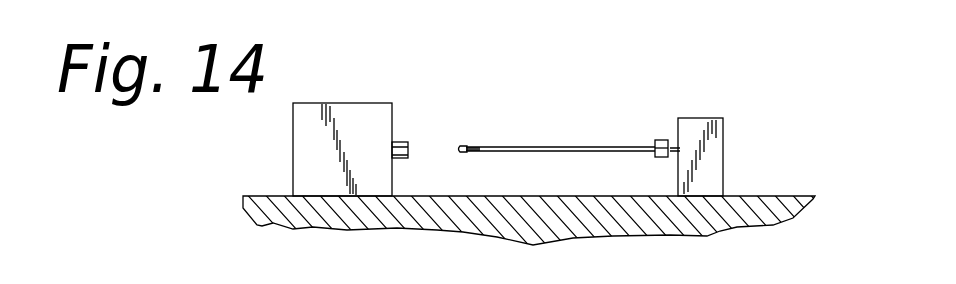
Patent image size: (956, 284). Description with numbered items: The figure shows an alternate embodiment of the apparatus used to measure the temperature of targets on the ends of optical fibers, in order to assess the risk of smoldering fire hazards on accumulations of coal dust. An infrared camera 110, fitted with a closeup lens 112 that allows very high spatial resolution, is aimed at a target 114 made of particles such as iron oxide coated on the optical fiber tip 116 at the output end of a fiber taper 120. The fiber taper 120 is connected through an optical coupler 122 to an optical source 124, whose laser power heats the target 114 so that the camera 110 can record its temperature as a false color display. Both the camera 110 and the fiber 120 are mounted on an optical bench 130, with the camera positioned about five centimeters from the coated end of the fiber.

The infrared camera 110 is at (358, 102).
The closeup lens 112 is at (397, 141).
The target 114 is at (463, 146).
The optical fiber tip 116 is at (465, 145).
The fiber taper 120 is at (612, 146).
The optical coupler 122 is at (663, 140).
The optical source 124 is at (718, 143).
The optical bench 130 is at (795, 222).